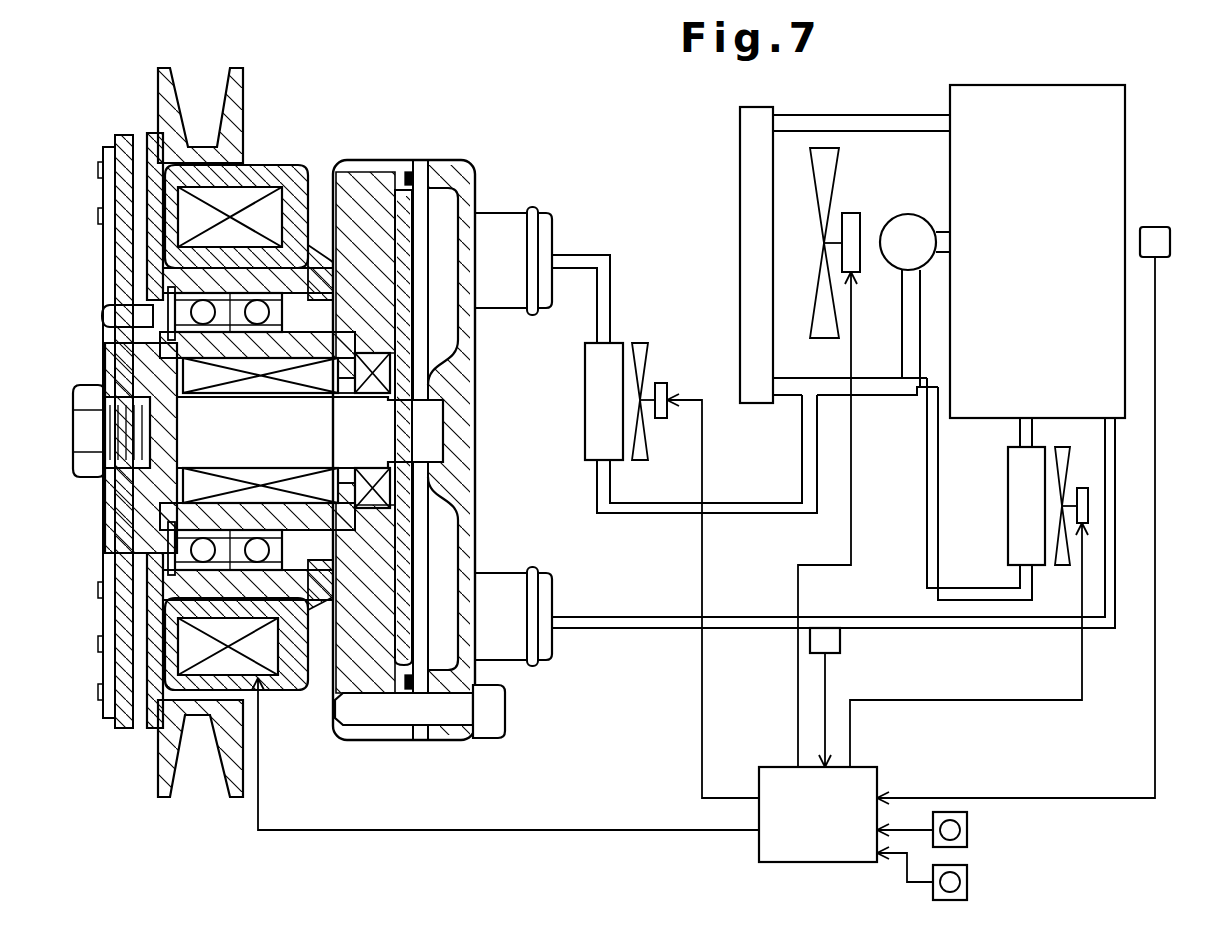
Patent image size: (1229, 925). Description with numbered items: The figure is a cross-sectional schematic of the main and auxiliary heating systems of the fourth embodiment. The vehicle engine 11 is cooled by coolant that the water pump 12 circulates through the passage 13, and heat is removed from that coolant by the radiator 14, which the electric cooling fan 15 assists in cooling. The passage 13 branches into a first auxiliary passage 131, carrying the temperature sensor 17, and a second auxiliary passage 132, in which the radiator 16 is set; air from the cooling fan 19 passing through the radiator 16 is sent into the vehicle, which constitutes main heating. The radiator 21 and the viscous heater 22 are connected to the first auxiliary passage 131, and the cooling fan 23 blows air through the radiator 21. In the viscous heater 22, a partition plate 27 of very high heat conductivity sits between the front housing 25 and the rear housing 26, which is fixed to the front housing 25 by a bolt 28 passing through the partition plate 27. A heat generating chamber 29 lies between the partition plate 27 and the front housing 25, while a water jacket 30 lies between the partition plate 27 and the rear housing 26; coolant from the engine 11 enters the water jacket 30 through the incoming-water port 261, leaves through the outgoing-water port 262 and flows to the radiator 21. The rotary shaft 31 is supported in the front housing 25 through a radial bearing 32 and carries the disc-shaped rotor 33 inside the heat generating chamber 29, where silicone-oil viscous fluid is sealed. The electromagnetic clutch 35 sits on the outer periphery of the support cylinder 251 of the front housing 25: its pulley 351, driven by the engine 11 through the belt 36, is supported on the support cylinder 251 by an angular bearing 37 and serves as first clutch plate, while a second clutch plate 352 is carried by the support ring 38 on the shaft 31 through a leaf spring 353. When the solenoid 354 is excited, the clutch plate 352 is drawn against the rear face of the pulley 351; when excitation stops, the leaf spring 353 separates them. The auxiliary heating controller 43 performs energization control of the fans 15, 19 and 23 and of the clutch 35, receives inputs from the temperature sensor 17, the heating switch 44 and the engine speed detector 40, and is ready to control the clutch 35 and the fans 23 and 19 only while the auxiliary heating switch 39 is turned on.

The vehicle engine 11 is at (1123, 108).
The water pump 12 is at (906, 212).
The passage 13 is at (865, 114).
The first auxiliary passage 131 is at (640, 515).
The second auxiliary passage 132 is at (952, 588).
The radiator 14 is at (740, 200).
The electric cooling fan 15 is at (835, 168).
The radiator 16 is at (1008, 460).
The temperature sensor 17 is at (840, 643).
The cooling fan 19 is at (1065, 462).
The radiator 21 is at (585, 400).
The viscous heater 22 is at (556, 116).
The cooling fan 23 is at (648, 352).
The front housing 25 is at (370, 170).
The rear housing 26 is at (452, 165).
The incoming-water port 261 is at (550, 657).
The outgoing-water port 262 is at (505, 212).
The partition plate 27 is at (420, 165).
The bolt 28 is at (505, 712).
The heat generating chamber 29 is at (400, 190).
The water jacket 30 is at (455, 322).
The rotary shaft 31 is at (445, 425).
The radial bearing 32 is at (328, 355).
The rotor 33 is at (405, 535).
The electromagnetic clutch 35 is at (294, 111).
The pulley 351 is at (158, 102).
The second clutch plate 352 is at (115, 199).
The leaf spring 353 is at (105, 225).
The solenoid 354 is at (283, 668).
The belt 36 is at (200, 797).
The angular bearing 37 is at (262, 546).
The support ring 38 is at (107, 498).
The auxiliary heating switch 39 is at (967, 882).
The engine speed detector 40 is at (1158, 227).
The auxiliary heating controller 43 is at (877, 772).
The heating switch 44 is at (967, 830).
The support cylinder 251 is at (108, 318).